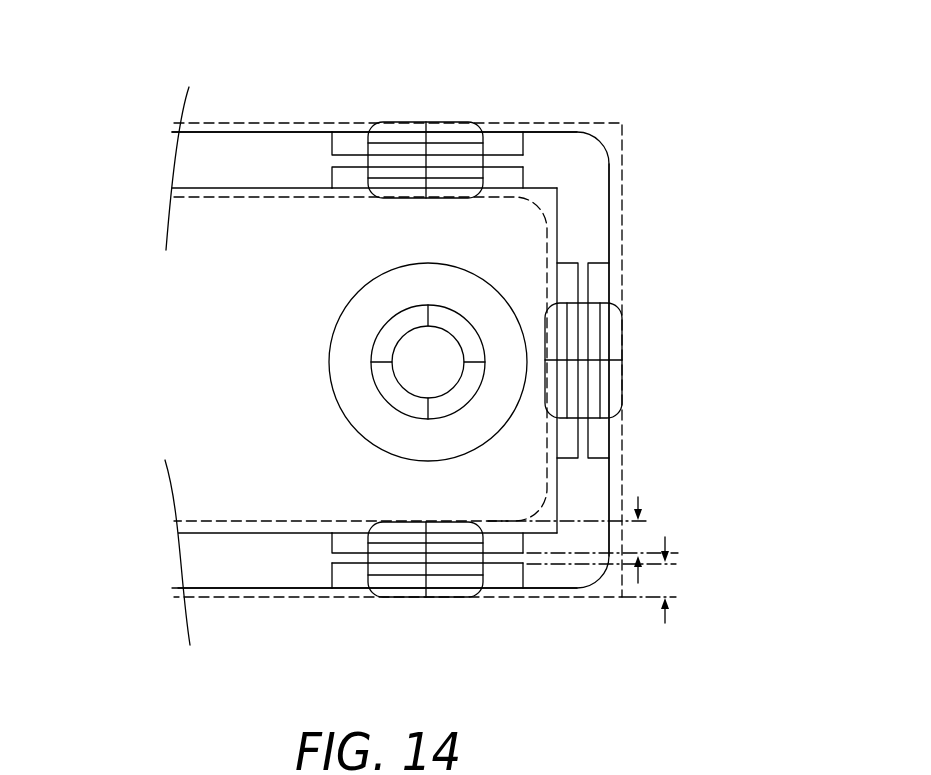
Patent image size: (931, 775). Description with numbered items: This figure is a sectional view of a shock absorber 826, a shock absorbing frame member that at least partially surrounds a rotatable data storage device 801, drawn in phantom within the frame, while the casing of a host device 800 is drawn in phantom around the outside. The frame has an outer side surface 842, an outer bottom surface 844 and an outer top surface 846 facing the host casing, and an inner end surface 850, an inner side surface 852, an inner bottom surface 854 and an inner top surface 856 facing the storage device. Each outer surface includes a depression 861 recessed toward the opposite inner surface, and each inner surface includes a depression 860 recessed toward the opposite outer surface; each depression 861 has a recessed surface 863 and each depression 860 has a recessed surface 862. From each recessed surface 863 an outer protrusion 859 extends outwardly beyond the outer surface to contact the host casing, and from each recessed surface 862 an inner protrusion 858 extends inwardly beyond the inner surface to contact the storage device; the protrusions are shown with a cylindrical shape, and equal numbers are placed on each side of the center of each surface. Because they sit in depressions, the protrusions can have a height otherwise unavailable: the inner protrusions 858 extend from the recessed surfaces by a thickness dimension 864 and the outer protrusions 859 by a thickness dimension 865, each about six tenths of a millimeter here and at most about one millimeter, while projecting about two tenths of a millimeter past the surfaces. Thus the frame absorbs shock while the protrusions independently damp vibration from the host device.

The host device casing 800 is at (283, 131).
The rotatable data storage device 801 is at (609, 172).
The shock absorber 826 is at (594, 127).
The outer side surface 842 is at (609, 253).
The outer bottom surface 844 is at (548, 590).
The outer top surface 846 is at (535, 130).
The inner end surface 850 is at (213, 239).
The inner side surface 852 is at (557, 218).
The inner bottom surface 854 is at (263, 533).
The inner top surface 856 is at (220, 188).
The inner protrusion 858 is at (428, 322).
The outer protrusion 859 is at (415, 128).
The depression 860 is at (348, 177).
The depression 861 is at (347, 134).
The recessed surface 862 is at (452, 444).
The recessed surface 863 is at (495, 128).
The thickness dimension 864 is at (640, 512).
The thickness dimension 865 is at (668, 550).